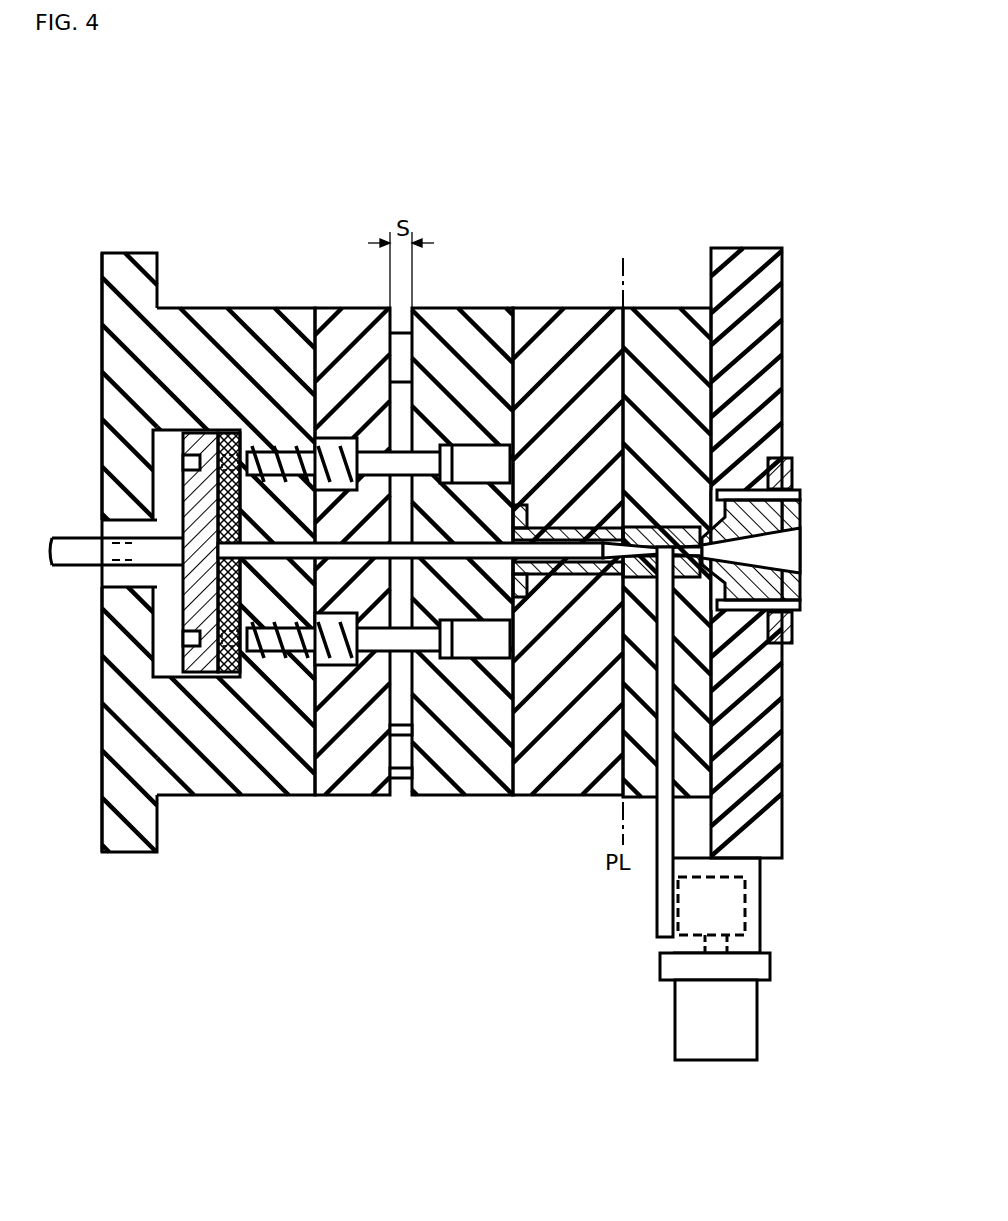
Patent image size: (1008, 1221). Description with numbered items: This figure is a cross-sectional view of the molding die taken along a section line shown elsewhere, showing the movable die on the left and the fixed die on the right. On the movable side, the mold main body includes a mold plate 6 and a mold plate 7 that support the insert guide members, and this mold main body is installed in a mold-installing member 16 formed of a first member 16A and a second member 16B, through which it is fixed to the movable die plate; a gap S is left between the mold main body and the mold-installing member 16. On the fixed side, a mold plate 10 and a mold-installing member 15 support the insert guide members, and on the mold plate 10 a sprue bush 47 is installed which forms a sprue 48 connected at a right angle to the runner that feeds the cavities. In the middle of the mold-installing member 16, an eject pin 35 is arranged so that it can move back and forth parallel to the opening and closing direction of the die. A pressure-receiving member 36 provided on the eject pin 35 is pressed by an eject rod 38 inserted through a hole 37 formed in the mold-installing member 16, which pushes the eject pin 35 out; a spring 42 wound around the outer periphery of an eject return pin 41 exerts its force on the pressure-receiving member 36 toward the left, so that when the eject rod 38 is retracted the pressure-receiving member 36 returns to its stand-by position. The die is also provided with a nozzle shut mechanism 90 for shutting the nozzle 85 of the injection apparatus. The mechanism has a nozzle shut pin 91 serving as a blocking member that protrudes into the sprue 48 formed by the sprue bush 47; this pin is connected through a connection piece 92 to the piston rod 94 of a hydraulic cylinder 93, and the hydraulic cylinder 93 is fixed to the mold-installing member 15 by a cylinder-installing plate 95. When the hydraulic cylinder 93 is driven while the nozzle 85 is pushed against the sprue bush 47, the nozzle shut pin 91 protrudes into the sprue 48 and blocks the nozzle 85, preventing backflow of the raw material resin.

The mold plate 6 is at (570, 790).
The mold plate 7 is at (473, 795).
The mold plate 10 is at (640, 797).
The mold-installing member 15 is at (750, 262).
The mold-installing member 16 is at (222, 798).
The first member 16A is at (130, 840).
The second member 16B is at (350, 780).
The eject pin 35 is at (276, 543).
The pressure-receiving member 36 is at (190, 490).
The hole 37 is at (112, 578).
The eject rod 38 is at (82, 540).
The eject return pin 41 is at (306, 458).
The spring 42 is at (268, 452).
The sprue bush 47 is at (665, 525).
The sprue 48 is at (628, 548).
The nozzle 85 is at (800, 586).
The nozzle shut mechanism 90 is at (800, 885).
The nozzle shut pin 91 is at (668, 720).
The connection piece 92 is at (745, 905).
The hydraulic cylinder 93 is at (757, 1015).
The piston rod 94 is at (727, 943).
The cylinder-installing plate 95 is at (762, 880).